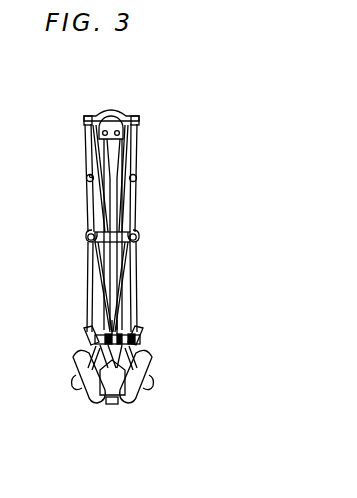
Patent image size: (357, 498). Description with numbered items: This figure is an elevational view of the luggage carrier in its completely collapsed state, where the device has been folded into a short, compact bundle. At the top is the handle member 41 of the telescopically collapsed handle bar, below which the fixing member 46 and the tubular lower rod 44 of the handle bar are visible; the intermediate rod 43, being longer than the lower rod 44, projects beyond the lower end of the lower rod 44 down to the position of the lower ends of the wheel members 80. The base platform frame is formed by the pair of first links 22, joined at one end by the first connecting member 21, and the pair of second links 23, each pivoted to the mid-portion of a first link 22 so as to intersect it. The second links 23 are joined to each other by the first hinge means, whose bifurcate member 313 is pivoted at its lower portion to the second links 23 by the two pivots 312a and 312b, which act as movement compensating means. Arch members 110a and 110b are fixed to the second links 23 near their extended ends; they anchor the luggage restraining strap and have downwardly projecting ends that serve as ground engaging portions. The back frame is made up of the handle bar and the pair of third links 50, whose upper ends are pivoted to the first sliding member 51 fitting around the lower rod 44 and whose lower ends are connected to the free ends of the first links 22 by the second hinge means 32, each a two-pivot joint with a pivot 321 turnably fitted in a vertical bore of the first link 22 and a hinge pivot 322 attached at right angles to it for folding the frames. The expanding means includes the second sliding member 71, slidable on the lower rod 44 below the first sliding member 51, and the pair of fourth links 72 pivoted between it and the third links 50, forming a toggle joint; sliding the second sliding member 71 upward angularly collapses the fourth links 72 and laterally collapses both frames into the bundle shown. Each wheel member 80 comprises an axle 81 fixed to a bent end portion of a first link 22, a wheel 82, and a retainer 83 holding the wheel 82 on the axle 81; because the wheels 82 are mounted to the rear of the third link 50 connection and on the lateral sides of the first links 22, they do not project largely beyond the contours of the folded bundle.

The handle member 41 is at (108, 112).
The first connecting member 21 is at (113, 120).
The arch member 110a is at (93, 170).
The arch member 110b is at (133, 132).
The fixing member 46 is at (112, 148).
The second links 23 is at (97, 198).
The first sliding member 51 is at (121, 196).
The third links 50 is at (133, 212).
The second sliding member 71 is at (113, 230).
The lower rod 44 is at (112, 262).
The fourth links 72 is at (90, 274).
The first links 22 is at (128, 287).
The pivot 312a is at (102, 328).
The pivot 312b is at (94, 346).
The bifurcate member 313 is at (116, 328).
The second hinge means 32 is at (152, 336).
The hinge pivot 322 is at (142, 340).
The pivot 321 is at (140, 352).
The wheel members 80 is at (67, 381).
The axle 81 is at (85, 393).
The wheel 82 is at (125, 392).
The retainer 83 is at (141, 390).
The intermediate rod 43 is at (112, 392).